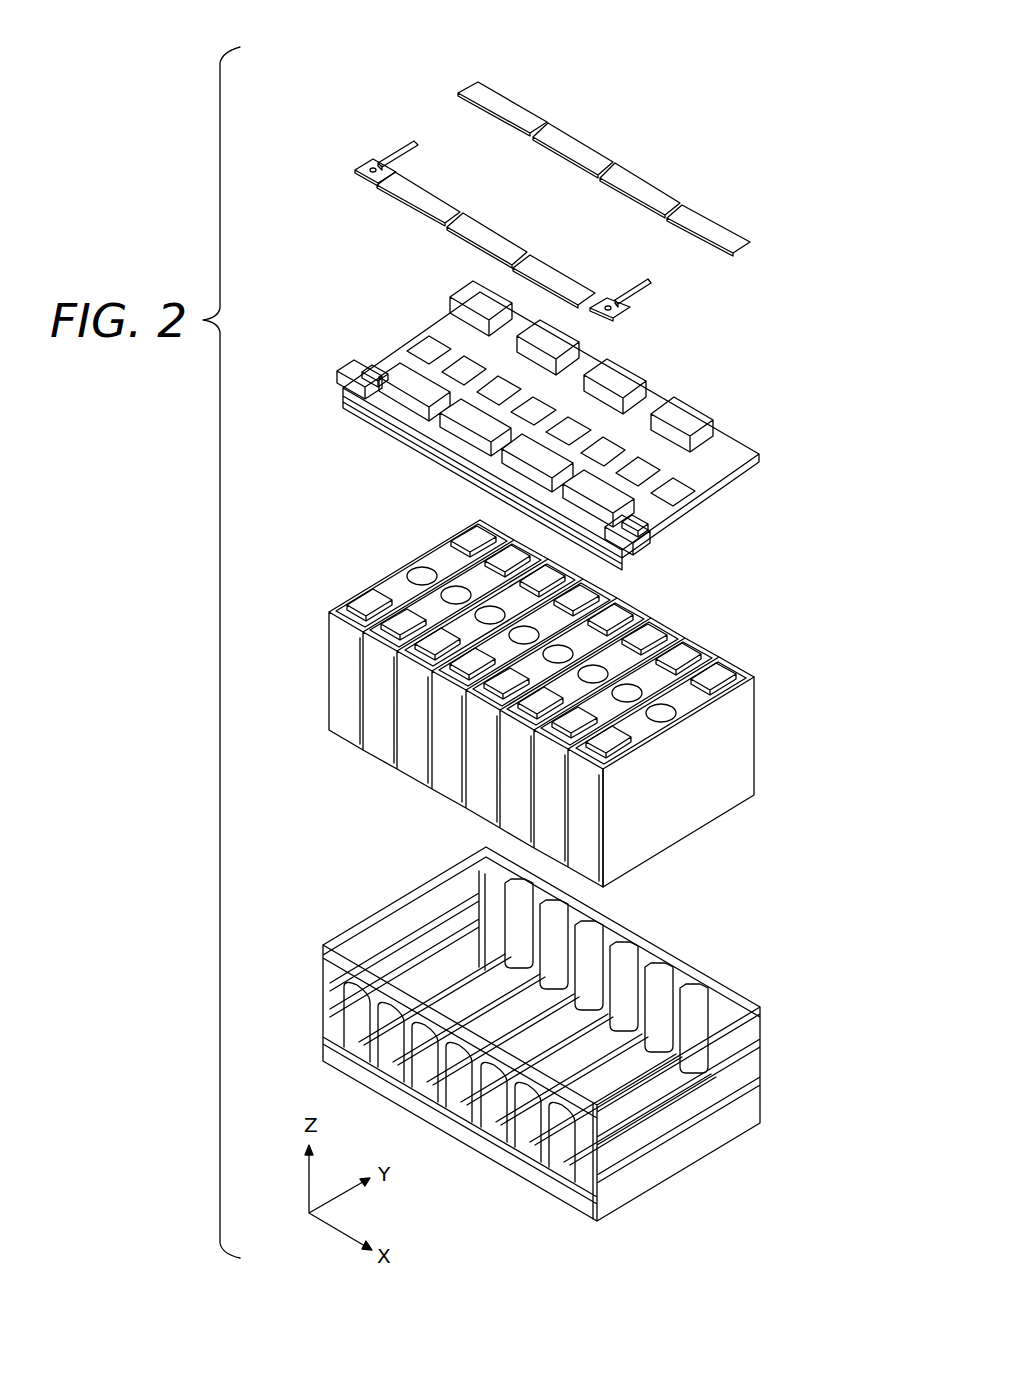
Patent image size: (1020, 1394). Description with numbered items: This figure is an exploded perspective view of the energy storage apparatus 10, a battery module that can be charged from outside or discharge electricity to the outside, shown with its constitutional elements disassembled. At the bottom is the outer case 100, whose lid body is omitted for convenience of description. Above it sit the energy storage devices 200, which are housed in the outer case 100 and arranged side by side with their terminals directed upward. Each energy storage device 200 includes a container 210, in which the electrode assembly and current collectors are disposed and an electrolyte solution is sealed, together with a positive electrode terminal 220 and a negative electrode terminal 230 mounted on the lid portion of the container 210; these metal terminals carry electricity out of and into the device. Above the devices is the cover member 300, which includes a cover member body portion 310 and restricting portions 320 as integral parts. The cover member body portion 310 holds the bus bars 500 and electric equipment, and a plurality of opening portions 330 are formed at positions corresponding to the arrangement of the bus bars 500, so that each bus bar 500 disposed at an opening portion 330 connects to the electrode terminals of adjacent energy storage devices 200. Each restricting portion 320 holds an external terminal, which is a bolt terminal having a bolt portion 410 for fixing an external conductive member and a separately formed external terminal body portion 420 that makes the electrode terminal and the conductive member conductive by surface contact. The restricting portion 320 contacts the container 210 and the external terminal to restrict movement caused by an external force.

The energy storage apparatus 10 is at (812, 103).
The outer case 100 is at (755, 1063).
The energy storage device 200 is at (542, 685).
The container 210 is at (735, 755).
The positive electrode terminal 220 is at (475, 540).
The negative electrode terminal 230 is at (362, 598).
The cover member 300 is at (560, 438).
The cover member body portion 310 is at (710, 487).
The restricting portion 320 is at (350, 383).
The opening portion 330 is at (633, 400).
The bolt portion 410 is at (372, 378).
The external terminal body portion 420 is at (362, 165).
The bus bar 500 is at (508, 110).